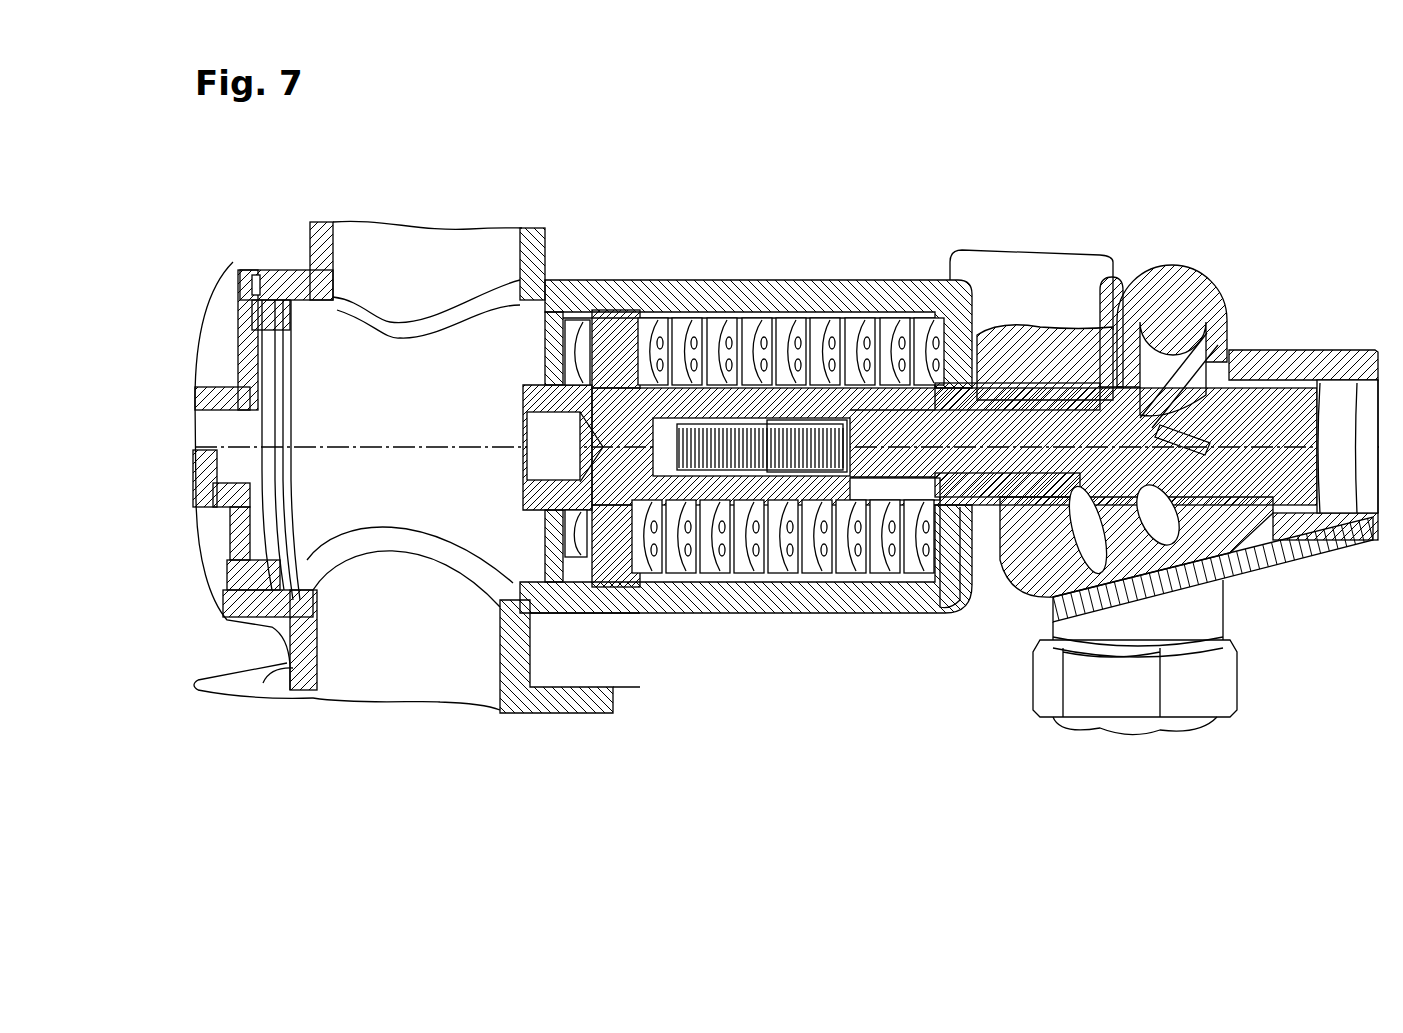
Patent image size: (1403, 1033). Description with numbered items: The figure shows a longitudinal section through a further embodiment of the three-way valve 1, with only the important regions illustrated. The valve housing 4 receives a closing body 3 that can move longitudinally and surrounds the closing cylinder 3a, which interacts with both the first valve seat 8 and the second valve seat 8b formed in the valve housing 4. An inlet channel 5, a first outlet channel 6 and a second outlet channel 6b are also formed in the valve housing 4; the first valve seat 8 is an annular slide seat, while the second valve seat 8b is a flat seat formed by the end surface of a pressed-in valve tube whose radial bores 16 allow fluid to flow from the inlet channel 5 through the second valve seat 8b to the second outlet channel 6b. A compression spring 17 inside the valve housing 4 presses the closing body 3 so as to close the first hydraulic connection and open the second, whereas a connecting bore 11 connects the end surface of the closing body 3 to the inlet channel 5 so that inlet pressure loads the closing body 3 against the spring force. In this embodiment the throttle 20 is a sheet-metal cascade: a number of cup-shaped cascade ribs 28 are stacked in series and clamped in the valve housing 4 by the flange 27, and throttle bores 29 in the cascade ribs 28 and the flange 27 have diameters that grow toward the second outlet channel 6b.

The three-way valve 1 is at (1015, 157).
The throttle 20 is at (758, 272).
The throttle bores 29 is at (576, 340).
The flange 27 is at (600, 312).
The compression spring 17 is at (702, 430).
The radial bores 16 is at (910, 400).
The first valve seat 8 is at (1130, 400).
The first outlet channel 6 is at (1168, 325).
The closing cylinder 3a is at (1140, 430).
The closing body 3 is at (983, 510).
The connecting bore 11 is at (1250, 540).
The inlet channel 5 is at (1040, 587).
The second valve seat 8b is at (1070, 567).
The valve housing 4 is at (582, 600).
The cascade ribs 28 is at (718, 582).
The second outlet channel 6b is at (447, 487).